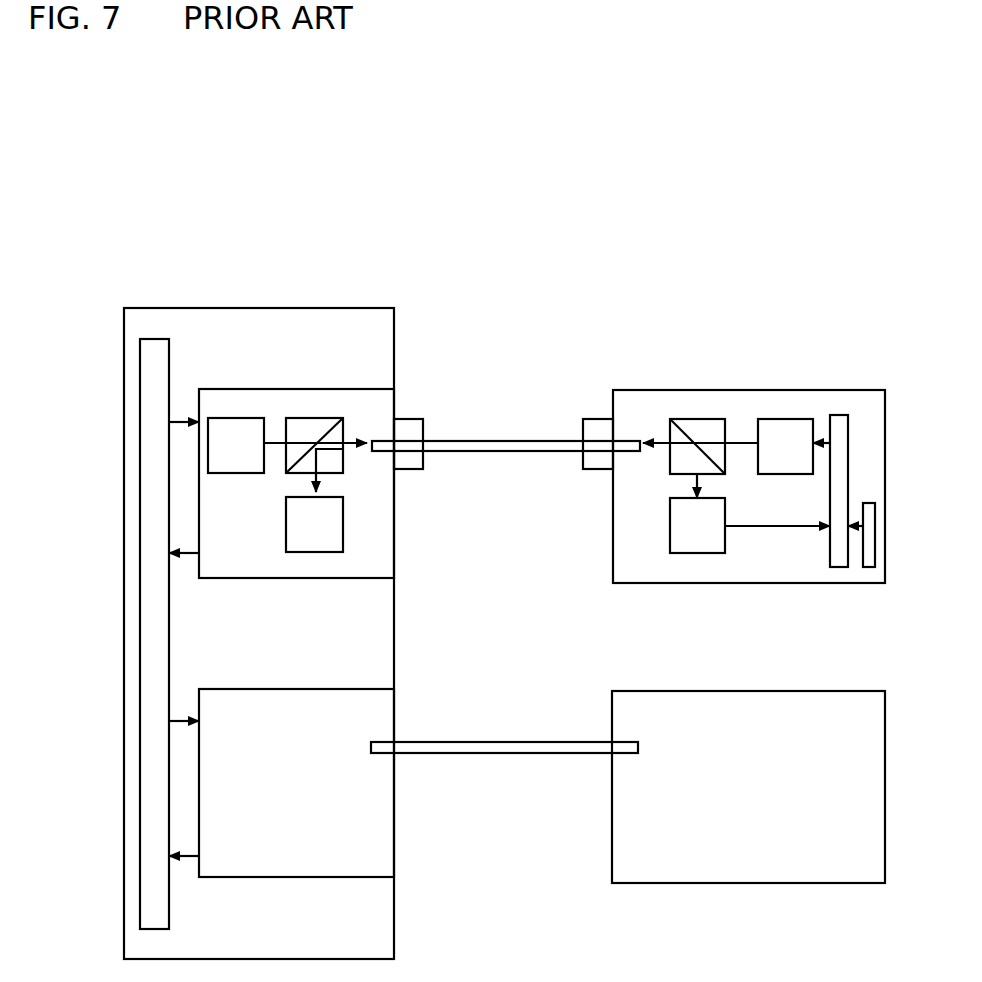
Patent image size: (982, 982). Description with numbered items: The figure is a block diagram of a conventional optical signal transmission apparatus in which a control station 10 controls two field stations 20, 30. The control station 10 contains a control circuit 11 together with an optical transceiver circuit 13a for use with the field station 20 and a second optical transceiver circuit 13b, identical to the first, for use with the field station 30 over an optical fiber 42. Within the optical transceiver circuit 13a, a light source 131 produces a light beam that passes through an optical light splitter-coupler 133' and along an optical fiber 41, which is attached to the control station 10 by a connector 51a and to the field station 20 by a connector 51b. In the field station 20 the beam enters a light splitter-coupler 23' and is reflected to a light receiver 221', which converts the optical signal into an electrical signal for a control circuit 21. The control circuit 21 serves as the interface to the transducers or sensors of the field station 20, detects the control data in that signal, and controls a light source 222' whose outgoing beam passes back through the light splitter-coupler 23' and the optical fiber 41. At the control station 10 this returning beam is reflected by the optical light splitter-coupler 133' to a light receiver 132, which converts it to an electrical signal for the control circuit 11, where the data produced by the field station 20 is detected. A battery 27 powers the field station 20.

The control station 10 is at (215, 280).
The control circuit 11 is at (153, 357).
The optical transceiver circuit 13a is at (235, 397).
The light source 131 is at (246, 426).
The optical light splitter-coupler 133' is at (346, 365).
The light receiver 132 is at (317, 530).
The optical fiber 41 is at (473, 446).
The connector 51a is at (407, 460).
The connector 51b is at (600, 465).
The optical fiber 42 is at (447, 746).
The optical transceiver circuit 13b is at (372, 862).
The field station 30 is at (747, 870).
The field station 20 is at (720, 595).
The light splitter-coupler 23' is at (685, 388).
The light source 222' is at (768, 389).
The control circuit 21 is at (838, 425).
The battery 27 is at (870, 570).
The light receiver 221' is at (679, 573).